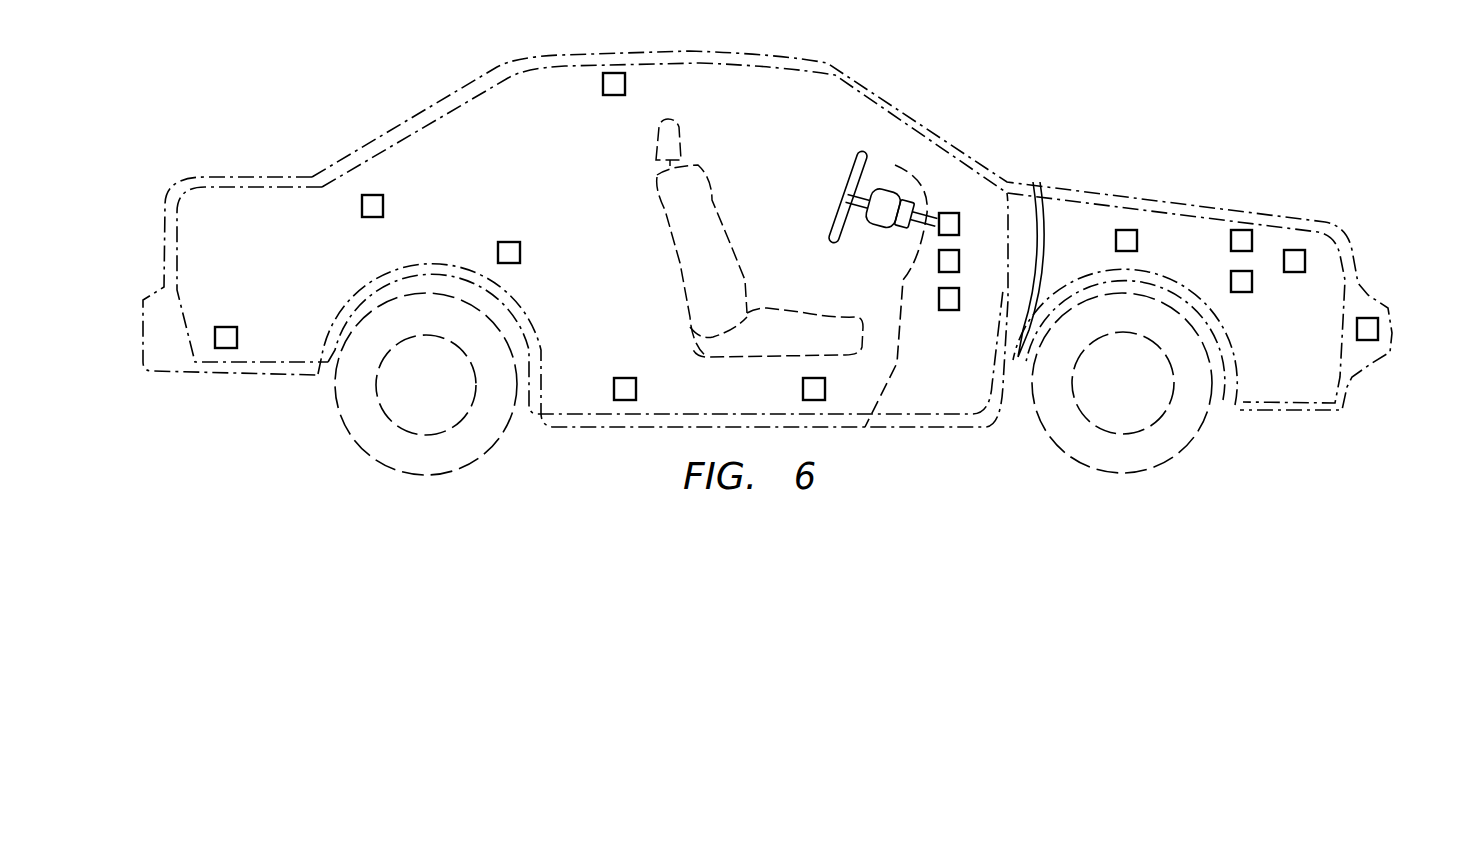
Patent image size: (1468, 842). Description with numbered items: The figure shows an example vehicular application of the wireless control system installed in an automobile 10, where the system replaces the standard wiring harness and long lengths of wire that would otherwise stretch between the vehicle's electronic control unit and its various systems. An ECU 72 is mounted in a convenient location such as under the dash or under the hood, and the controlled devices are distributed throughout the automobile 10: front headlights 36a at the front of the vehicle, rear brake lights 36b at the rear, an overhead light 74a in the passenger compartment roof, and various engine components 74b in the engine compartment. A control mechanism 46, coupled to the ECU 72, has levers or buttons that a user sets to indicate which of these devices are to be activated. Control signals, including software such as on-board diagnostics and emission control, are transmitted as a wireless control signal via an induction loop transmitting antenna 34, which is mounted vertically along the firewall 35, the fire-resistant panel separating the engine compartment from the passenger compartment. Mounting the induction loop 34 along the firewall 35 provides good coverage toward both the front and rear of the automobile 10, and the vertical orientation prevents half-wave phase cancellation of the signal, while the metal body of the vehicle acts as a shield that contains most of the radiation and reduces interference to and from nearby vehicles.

The automobile 10 is at (1090, 83).
The induction loop transmitting antenna 34 is at (1040, 198).
The firewall 35 is at (1057, 243).
The front headlights 36a is at (1407, 341).
The rear brake lights 36b is at (362, 205).
The control mechanism 46 is at (950, 213).
The ECU 72 is at (1128, 230).
The overhead light 74a is at (612, 97).
The engine components 74b is at (1242, 230).